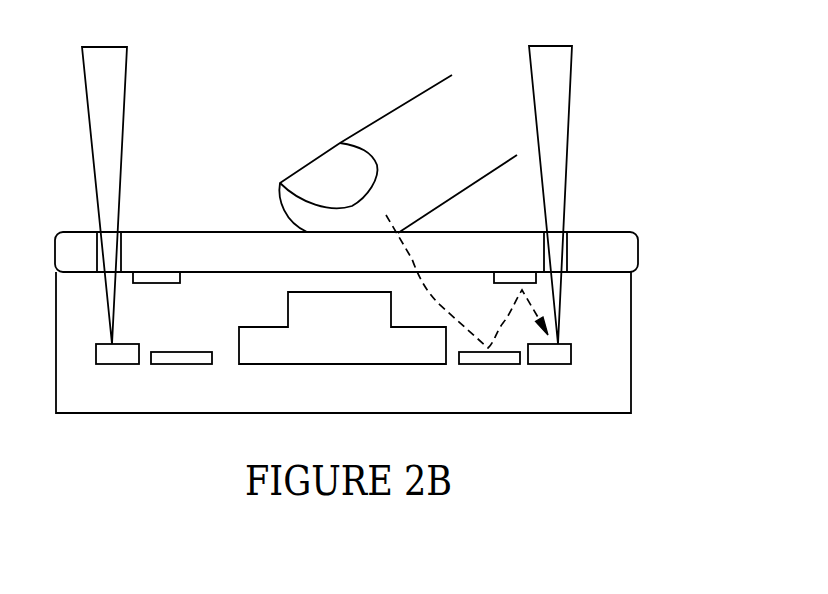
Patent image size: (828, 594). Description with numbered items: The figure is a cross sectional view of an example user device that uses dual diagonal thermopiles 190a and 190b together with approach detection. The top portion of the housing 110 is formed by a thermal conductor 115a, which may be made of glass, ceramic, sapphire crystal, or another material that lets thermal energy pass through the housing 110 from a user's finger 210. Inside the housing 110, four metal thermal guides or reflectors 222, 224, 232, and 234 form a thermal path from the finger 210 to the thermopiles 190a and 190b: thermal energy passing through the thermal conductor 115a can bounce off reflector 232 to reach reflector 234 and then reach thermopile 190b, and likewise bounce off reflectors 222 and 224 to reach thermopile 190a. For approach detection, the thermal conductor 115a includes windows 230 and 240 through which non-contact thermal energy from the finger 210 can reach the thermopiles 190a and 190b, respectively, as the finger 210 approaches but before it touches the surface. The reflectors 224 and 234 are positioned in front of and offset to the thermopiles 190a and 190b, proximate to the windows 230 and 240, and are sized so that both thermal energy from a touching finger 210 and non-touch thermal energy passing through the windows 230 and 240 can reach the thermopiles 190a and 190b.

The housing 110 is at (631, 343).
The thermal conductor 115a is at (638, 252).
The thermopile 190a is at (116, 364).
The thermopile 190b is at (550, 364).
The finger 210 is at (388, 105).
The reflector 222 is at (180, 364).
The reflector 224 is at (146, 284).
The window 230 is at (121, 246).
The reflector 232 is at (492, 364).
The reflector 234 is at (503, 284).
The window 240 is at (544, 253).